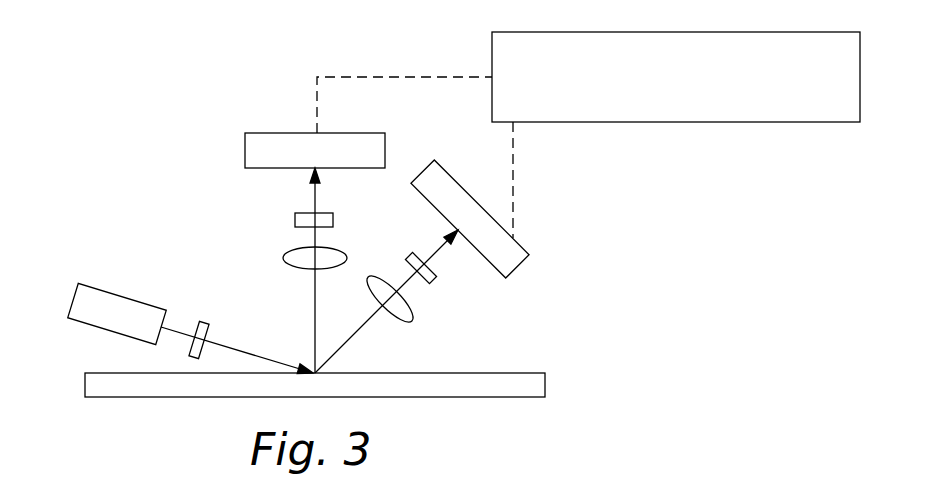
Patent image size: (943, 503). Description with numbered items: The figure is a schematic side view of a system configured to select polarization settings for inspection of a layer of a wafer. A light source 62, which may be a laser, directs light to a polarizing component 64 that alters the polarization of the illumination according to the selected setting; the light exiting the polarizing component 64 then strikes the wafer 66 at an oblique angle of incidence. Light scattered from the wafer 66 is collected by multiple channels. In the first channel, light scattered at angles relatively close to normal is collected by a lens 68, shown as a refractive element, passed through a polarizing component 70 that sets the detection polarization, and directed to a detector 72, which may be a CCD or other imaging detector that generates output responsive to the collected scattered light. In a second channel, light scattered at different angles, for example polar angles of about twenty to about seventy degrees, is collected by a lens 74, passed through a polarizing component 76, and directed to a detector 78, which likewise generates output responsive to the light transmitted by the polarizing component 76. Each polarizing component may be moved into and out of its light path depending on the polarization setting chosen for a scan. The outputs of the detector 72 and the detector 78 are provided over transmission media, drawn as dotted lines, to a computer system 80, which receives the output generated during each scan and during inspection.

The light source 62 is at (99, 300).
The polarizing component 64 is at (173, 313).
The wafer 66 is at (285, 367).
The lens 68 is at (280, 243).
The polarizing component 70 is at (277, 204).
The detector 72 is at (276, 144).
The lens 74 is at (424, 315).
The polarizing component 76 is at (456, 286).
The detector 78 is at (502, 231).
The computer system 80 is at (676, 77).